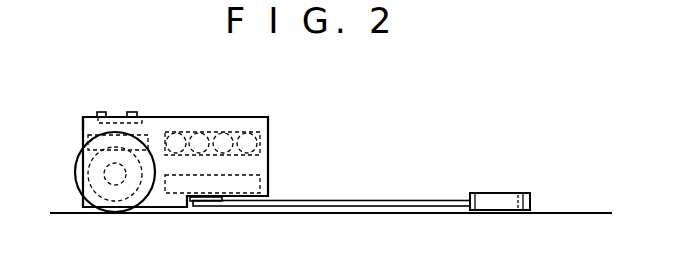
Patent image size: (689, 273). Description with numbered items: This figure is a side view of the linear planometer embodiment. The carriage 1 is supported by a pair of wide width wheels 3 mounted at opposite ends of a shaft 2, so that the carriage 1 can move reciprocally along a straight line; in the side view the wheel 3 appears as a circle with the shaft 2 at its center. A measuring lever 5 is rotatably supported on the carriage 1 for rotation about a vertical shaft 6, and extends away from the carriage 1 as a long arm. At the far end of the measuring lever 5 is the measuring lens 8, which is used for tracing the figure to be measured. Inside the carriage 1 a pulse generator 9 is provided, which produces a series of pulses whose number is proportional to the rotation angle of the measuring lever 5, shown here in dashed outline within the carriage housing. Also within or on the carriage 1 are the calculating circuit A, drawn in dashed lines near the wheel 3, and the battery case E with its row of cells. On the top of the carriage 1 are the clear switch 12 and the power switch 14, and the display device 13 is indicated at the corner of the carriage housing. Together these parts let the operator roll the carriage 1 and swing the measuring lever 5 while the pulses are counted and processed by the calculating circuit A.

The carriage 1 is at (232, 117).
The shaft 2 is at (113, 183).
The wide width wheels 3 is at (75, 183).
The measuring lever 5 is at (385, 200).
The vertical shaft 6 is at (213, 201).
The measuring lens 8 is at (495, 193).
The pulse generator 9 is at (265, 177).
The clear switch 12 is at (134, 112).
The display device 13 is at (82, 112).
The power switch 14 is at (101, 112).
The calculating circuit A is at (90, 137).
The battery case E is at (270, 118).